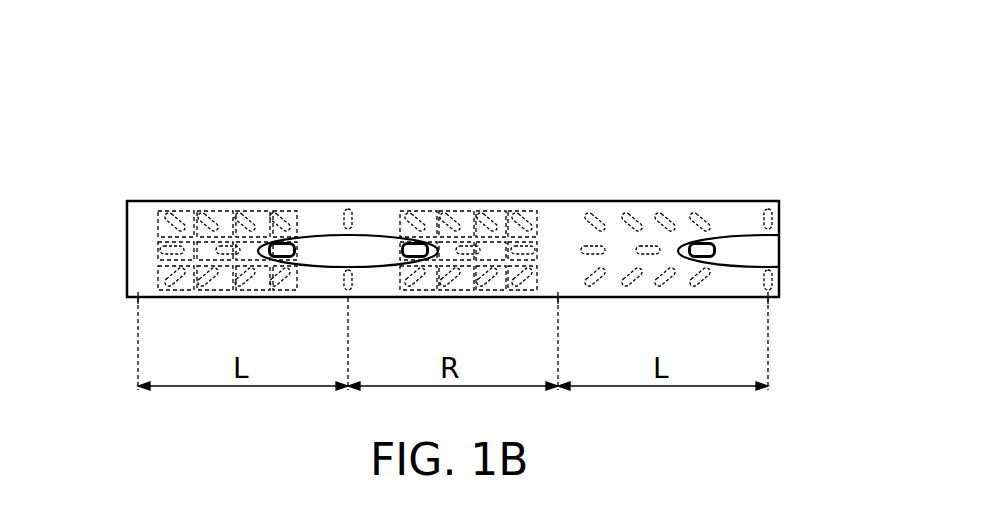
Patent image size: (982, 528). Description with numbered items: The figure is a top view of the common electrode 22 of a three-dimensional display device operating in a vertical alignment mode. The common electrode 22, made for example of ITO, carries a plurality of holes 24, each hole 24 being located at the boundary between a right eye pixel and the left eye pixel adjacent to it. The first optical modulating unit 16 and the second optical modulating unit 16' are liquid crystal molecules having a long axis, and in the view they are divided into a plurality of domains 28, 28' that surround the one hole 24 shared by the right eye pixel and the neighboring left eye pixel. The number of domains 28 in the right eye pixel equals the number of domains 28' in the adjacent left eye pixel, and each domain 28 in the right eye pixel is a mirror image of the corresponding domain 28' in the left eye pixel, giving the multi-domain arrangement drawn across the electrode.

The common electrode 22 is at (127, 249).
The hole 24 is at (319, 236).
The first optical modulating unit 16 is at (417, 218).
The second optical modulating unit 16' is at (290, 216).
The domain 28 is at (487, 214).
The domain 28' is at (214, 214).